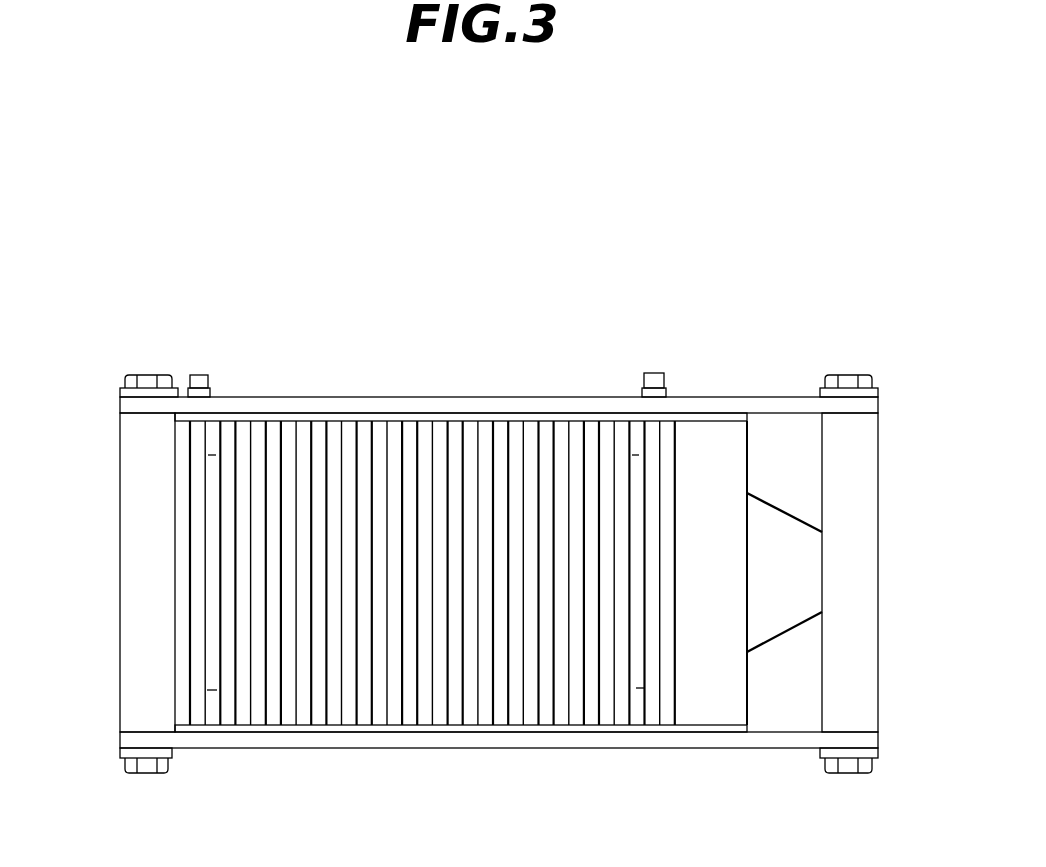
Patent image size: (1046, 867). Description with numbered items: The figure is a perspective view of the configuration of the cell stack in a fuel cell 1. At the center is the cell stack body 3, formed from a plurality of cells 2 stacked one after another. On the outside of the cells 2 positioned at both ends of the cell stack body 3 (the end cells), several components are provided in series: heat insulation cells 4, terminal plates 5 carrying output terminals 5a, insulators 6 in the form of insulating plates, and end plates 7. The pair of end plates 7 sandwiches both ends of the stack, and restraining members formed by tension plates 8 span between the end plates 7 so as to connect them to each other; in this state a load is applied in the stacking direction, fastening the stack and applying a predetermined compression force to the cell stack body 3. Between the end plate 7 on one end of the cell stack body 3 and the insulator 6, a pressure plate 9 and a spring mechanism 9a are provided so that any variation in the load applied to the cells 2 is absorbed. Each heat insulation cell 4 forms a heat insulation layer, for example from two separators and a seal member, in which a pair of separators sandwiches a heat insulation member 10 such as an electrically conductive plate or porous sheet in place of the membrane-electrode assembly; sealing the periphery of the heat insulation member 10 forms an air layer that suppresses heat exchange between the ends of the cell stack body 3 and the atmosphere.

The fuel cell 1 is at (626, 210).
The cell 2 is at (613, 295).
The cell stack body 3 is at (432, 488).
The heat insulation cell 4 is at (212, 440).
The terminal plate 5 is at (197, 715).
The output terminal 5a is at (198, 372).
The insulator 6 is at (182, 712).
The end plate 7 is at (128, 687).
The tension plate 8 is at (762, 396).
The pressure plate 9 is at (733, 442).
The spring mechanism 9a is at (813, 560).
The heat insulation member 10 is at (212, 545).